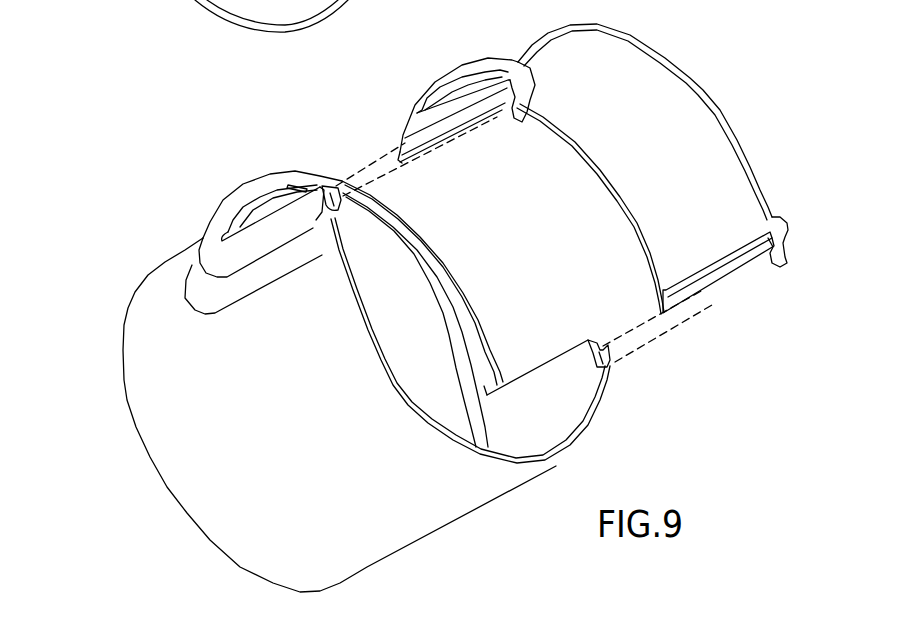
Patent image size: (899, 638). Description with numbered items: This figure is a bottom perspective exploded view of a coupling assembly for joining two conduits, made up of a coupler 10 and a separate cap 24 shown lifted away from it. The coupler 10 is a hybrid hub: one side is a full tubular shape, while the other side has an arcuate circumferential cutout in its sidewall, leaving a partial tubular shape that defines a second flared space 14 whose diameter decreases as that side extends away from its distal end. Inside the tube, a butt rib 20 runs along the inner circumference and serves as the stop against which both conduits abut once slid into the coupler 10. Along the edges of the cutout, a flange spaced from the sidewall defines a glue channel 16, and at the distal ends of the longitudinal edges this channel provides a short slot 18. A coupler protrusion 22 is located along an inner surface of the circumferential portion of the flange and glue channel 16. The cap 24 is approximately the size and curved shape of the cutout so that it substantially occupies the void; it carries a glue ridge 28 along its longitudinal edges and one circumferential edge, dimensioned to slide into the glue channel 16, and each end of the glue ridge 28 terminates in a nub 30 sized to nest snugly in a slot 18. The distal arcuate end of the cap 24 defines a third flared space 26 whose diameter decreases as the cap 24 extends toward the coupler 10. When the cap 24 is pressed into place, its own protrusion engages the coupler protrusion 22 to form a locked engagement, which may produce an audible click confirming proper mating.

The coupler 10 is at (142, 395).
The second flared space 14 is at (560, 417).
The glue channel 16 is at (428, 246).
The slot 18 is at (318, 220).
The butt rib 20 is at (440, 287).
The coupler protrusion 22 is at (305, 187).
The cap 24 is at (531, 47).
The third flared space 26 is at (693, 105).
The glue ridge 28 is at (621, 202).
The nub 30 is at (508, 117).